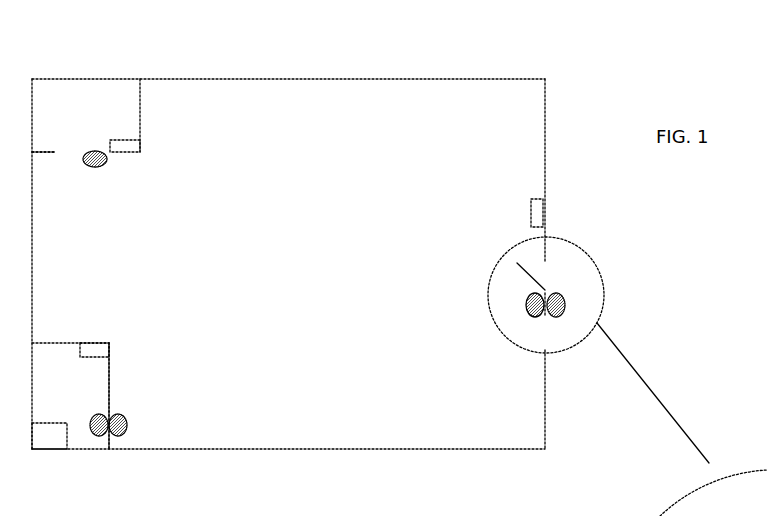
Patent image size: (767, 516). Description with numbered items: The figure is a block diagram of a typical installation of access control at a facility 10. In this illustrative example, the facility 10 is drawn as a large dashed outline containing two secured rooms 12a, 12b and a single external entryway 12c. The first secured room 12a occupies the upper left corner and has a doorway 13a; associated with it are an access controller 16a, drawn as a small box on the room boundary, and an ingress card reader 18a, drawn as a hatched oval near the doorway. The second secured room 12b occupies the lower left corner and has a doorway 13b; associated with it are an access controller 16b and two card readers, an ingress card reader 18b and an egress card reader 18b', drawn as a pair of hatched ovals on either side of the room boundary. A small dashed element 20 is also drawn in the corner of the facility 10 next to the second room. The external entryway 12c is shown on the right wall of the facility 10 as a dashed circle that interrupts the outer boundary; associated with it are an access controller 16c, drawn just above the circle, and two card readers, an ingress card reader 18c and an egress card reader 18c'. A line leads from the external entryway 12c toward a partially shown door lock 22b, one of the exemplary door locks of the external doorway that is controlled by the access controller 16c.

The facility 10 is at (292, 55).
The secured room 12a is at (86, 115).
The secured room 12b is at (114, 396).
The external entryway 12c is at (559, 263).
The doorway 13a is at (70, 152).
The doorway 13b is at (109, 396).
The access controller 16a is at (140, 150).
The access controller 16b is at (88, 343).
The access controller 16c is at (531, 212).
The ingress card reader 18a is at (100, 168).
The ingress card reader 18b is at (126, 454).
The egress card reader 18b' is at (180, 454).
The ingress card reader 18c is at (513, 338).
The egress card reader 18c' is at (580, 342).
The corner pocket 20 is at (48, 451).
The door lock 22b is at (713, 493).